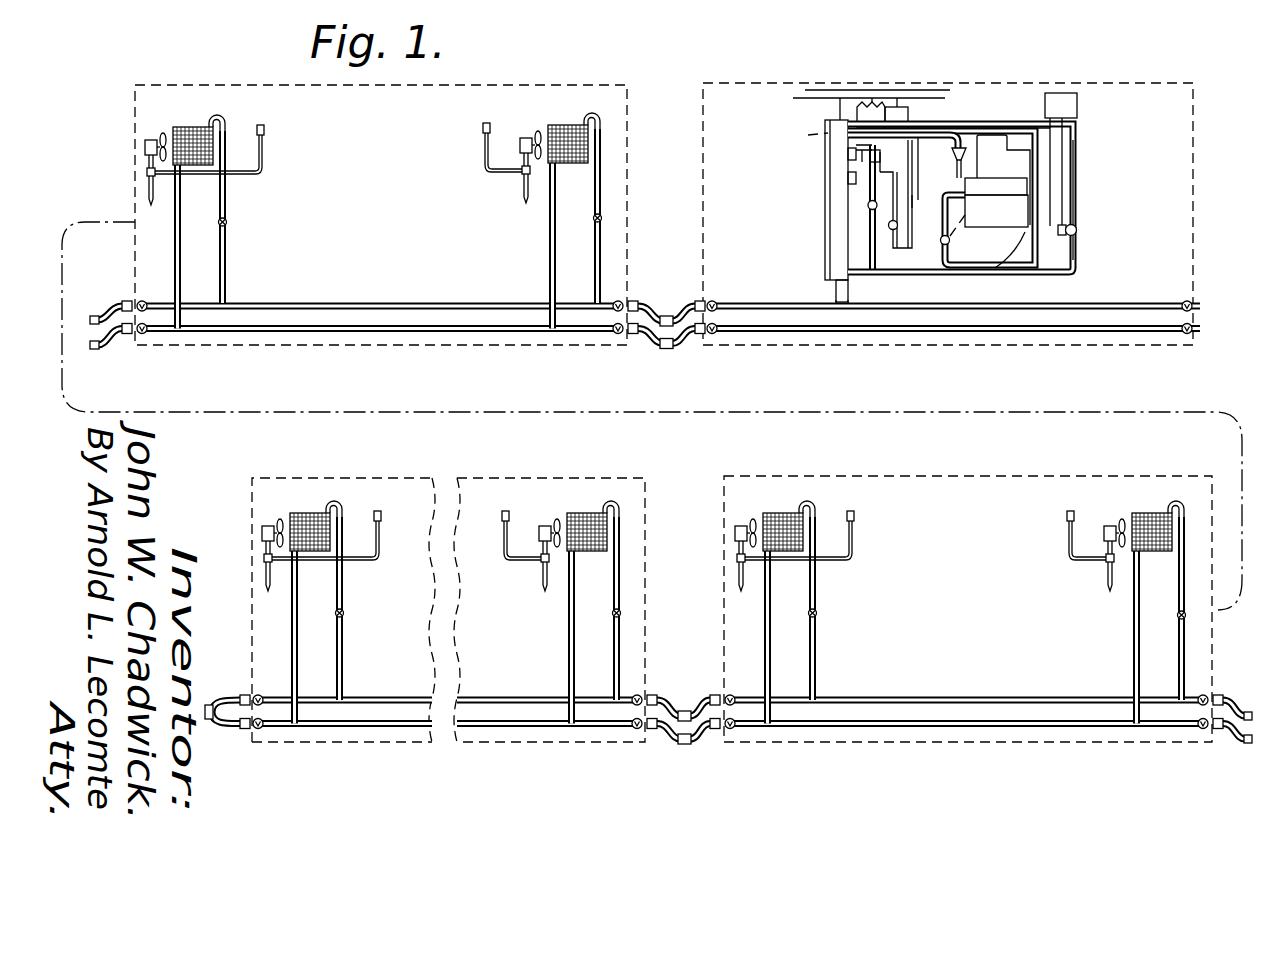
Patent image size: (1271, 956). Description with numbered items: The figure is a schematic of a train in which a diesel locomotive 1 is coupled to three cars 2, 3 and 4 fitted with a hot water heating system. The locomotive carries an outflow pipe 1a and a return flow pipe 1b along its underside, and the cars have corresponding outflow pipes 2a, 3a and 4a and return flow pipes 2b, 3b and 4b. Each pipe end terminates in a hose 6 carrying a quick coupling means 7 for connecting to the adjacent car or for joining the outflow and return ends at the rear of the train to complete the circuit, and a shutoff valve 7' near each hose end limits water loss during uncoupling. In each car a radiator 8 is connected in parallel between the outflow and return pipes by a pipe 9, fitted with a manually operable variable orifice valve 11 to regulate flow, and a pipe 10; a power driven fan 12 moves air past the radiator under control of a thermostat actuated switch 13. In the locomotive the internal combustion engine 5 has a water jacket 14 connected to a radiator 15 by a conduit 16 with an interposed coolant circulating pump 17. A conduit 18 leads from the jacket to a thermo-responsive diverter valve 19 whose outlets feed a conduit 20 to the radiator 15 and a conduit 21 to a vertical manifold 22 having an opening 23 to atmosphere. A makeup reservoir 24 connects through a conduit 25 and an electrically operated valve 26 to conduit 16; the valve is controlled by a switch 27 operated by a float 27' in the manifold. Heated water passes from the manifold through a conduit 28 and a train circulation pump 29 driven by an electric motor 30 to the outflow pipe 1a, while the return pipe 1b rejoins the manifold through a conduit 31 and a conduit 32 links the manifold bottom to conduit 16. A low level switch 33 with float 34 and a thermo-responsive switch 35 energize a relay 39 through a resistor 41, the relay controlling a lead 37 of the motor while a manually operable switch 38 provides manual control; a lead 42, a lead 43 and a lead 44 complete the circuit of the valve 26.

The locomotive 1 is at (1190, 158).
The outflow pipe 1a is at (1083, 303).
The return flow pipe 1b is at (1075, 333).
The car 2 is at (627, 175).
The outflow pipe 2a is at (352, 302).
The return flow pipe 2b is at (404, 333).
The car 3 is at (975, 477).
The outflow pipe 3a is at (960, 697).
The return flow pipe 3b is at (990, 730).
The car 4 is at (483, 477).
The outflow pipe 4a is at (497, 697).
The return flow pipe 4b is at (497, 730).
The internal combustion engine 5 is at (993, 224).
The hose 6 is at (113, 306).
The quick coupling means 7 is at (668, 530).
The shutoff valve 7' is at (672, 518).
The radiator 8 is at (194, 126).
The pipe 9 is at (226, 200).
The pipe 10 is at (181, 245).
The variable orifice valve 11 is at (226, 222).
The power driven fan 12 is at (163, 134).
The thermostat actuated switch 13 is at (265, 129).
The water jacket 14 is at (996, 185).
The radiator 15 is at (1035, 143).
The conduit 16 is at (980, 268).
The coolant circulating pump 17 is at (951, 242).
The conduit 18 is at (957, 172).
The thermo-responsive diverter valve 19 is at (952, 153).
The conduit 20 is at (1003, 180).
The conduit 21 is at (915, 133).
The manifold 22 is at (826, 268).
The opening 23 is at (825, 122).
The makeup reservoir 24 is at (1078, 106).
The conduit 25 is at (1077, 195).
The electrically operated valve 26 is at (1078, 230).
The switch 27 is at (871, 86).
The float 27' is at (804, 137).
The conduit 28 is at (868, 237).
The train circulation pump 29 is at (868, 215).
The electric motor 30 is at (895, 240).
The conduit 31 is at (836, 290).
The conduit 32 is at (888, 276).
The low level switch 33 is at (848, 152).
The float 34 is at (848, 178).
The thermo-responsive switch 35 is at (868, 200).
The lead 37 is at (914, 208).
The manually operable switch 38 is at (920, 175).
The relay 39 is at (868, 147).
The resistor 41 is at (877, 102).
The lead 42 is at (860, 104).
The lead 43 is at (962, 126).
The lead 44 is at (1003, 126).